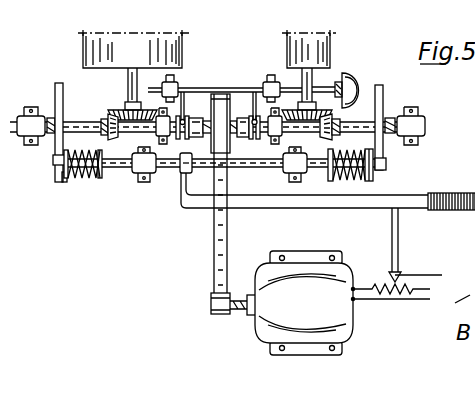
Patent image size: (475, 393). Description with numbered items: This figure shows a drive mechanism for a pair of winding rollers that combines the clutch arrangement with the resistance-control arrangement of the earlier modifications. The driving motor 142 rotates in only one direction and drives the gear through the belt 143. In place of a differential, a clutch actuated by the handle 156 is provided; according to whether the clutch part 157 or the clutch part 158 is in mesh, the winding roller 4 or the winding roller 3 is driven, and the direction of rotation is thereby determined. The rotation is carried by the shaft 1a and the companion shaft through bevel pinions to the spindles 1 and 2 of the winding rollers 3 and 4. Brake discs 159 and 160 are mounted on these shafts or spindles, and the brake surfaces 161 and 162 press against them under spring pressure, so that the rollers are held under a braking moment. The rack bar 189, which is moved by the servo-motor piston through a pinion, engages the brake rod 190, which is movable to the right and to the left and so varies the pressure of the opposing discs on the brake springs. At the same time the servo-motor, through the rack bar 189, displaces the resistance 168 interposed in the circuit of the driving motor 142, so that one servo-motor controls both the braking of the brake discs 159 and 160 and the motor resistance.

The winding roller spindle 1 is at (130, 88).
The shaft 1a is at (84, 124).
The winding roller spindle 2 is at (308, 84).
The winding roller 3 is at (177, 54).
The winding roller 4 is at (290, 44).
The driving motor 142 is at (342, 272).
The belt 143 is at (227, 239).
The handle 156 is at (355, 83).
The clutch part 157 is at (252, 116).
The clutch part 158 is at (186, 118).
The brake disc 159 is at (62, 100).
The brake disc 160 is at (383, 98).
The brake surface 161 is at (66, 180).
The brake surface 162 is at (378, 175).
The resistance 168 is at (389, 293).
The rack bar 189 is at (420, 198).
The brake rod 190 is at (175, 168).